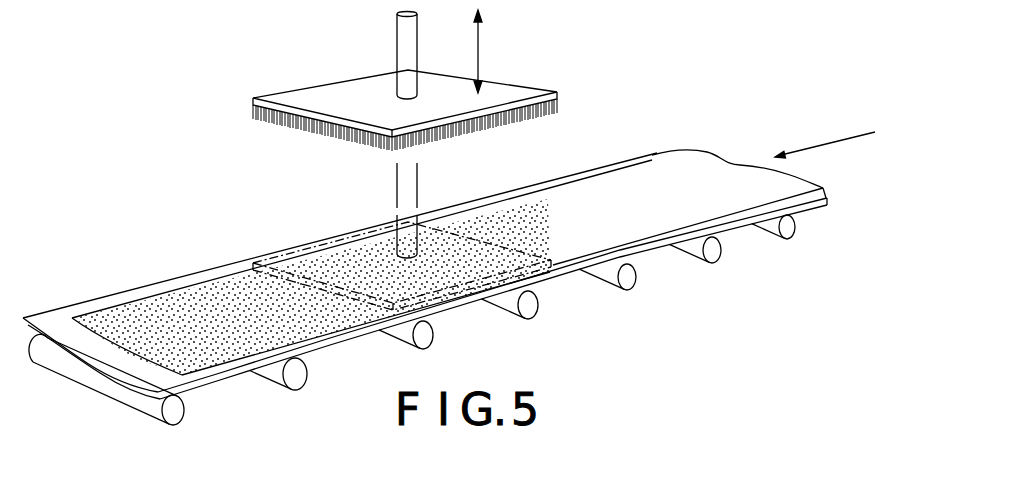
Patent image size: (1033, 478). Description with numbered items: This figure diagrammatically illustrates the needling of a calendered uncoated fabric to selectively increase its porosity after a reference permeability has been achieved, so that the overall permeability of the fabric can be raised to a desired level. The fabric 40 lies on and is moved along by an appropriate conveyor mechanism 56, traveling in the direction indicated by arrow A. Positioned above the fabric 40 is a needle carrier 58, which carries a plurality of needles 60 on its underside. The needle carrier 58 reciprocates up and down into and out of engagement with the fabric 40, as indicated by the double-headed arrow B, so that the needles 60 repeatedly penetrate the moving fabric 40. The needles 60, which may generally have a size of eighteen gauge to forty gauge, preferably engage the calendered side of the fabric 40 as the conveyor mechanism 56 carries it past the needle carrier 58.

The fabric 40 is at (616, 188).
The conveyor mechanism 56 is at (58, 310).
The needle carrier 58 is at (330, 97).
The needles 60 is at (308, 147).
The arrow indicating direction of fabric movement A is at (827, 146).
The arrow indicating needle carrier reciprocation B is at (480, 50).